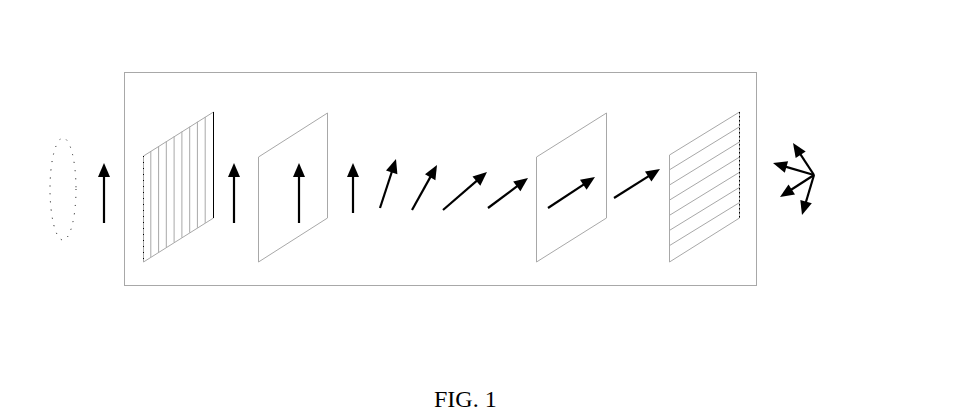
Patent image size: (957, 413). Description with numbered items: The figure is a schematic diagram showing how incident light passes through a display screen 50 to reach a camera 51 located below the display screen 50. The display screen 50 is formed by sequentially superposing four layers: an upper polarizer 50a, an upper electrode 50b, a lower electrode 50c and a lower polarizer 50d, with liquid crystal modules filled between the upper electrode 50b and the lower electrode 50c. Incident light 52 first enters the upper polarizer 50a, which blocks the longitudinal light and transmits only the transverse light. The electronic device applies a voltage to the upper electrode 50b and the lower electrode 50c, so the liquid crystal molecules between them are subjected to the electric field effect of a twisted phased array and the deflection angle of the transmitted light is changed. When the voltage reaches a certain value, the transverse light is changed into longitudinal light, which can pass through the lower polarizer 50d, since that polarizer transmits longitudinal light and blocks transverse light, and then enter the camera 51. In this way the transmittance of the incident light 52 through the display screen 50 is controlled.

The display screen 50 is at (588, 72).
The camera 51 is at (87, 237).
The incident light 52 is at (821, 199).
The upper polarizer 50a is at (708, 218).
The upper electrode 50b is at (582, 219).
The lower electrode 50c is at (304, 225).
The lower polarizer 50d is at (194, 224).